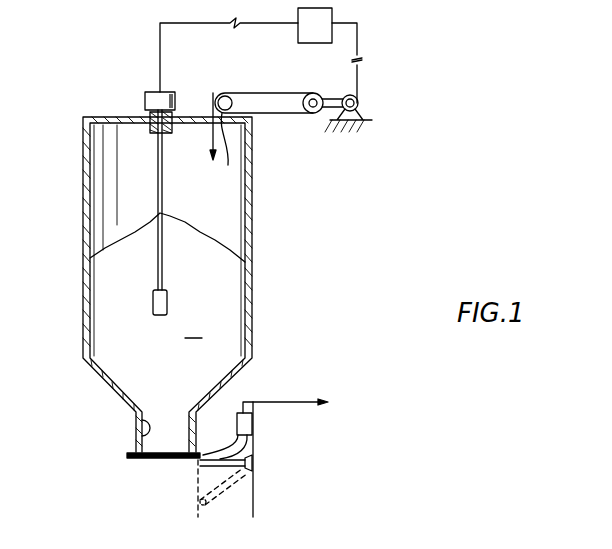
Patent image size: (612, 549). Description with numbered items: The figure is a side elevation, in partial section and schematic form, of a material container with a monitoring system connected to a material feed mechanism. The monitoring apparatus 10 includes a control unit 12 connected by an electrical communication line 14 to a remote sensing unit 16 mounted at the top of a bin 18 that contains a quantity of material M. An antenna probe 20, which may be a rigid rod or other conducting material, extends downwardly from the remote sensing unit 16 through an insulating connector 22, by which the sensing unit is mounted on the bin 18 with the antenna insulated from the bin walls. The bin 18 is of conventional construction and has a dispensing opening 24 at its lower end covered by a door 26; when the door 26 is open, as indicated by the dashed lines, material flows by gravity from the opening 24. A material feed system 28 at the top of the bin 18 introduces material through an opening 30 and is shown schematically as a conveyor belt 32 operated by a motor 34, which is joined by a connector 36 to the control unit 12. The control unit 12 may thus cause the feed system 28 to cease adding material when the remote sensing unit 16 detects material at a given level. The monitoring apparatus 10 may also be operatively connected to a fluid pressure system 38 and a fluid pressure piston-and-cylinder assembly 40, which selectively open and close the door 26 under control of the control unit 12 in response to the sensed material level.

The monitoring apparatus 10 is at (96, 42).
The control unit 12 is at (301, 40).
The electrical communication line 14 is at (170, 23).
The remote sensing unit 16 is at (145, 100).
The bin 18 is at (253, 224).
The antenna probe 20 is at (164, 272).
The insulating connector 22 is at (152, 135).
The dispensing opening 24 is at (136, 428).
The door 26 is at (152, 460).
The material feed system 28 is at (298, 136).
The opening 30 is at (219, 144).
The conveyor belt 32 is at (277, 95).
The motor 34 is at (359, 104).
The connector 36 is at (360, 75).
The fluid pressure system 38 is at (254, 425).
The fluid pressure piston-and-cylinder assembly 40 is at (217, 464).